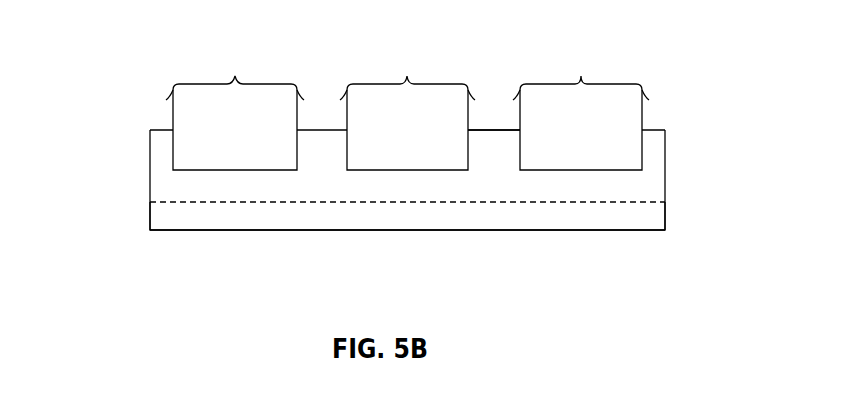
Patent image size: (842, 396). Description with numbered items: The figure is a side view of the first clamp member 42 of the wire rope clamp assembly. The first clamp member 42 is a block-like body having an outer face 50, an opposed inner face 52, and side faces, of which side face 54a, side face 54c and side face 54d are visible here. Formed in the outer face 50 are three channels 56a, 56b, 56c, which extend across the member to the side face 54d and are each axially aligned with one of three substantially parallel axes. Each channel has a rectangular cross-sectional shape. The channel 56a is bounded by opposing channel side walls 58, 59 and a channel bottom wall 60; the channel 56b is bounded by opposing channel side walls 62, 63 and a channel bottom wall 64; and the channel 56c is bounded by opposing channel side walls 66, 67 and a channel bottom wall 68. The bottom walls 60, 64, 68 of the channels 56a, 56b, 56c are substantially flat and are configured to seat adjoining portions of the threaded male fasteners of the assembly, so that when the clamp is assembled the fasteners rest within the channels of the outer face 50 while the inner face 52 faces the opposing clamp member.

The first clamp member 42 is at (139, 39).
The outer face 50 is at (652, 128).
The inner face 52 is at (513, 232).
The side face 54a is at (667, 193).
The side face 54c is at (148, 213).
The side face 54d is at (252, 224).
The channel 56a is at (581, 111).
The channel 56b is at (407, 111).
The channel 56c is at (235, 112).
The channel side wall 58 is at (647, 160).
The channel side wall 59 is at (523, 155).
The channel bottom wall 60 is at (575, 170).
The channel side wall 62 is at (466, 163).
The channel side wall 63 is at (352, 157).
The channel bottom wall 64 is at (405, 170).
The channel side wall 66 is at (285, 163).
The channel side wall 67 is at (180, 160).
The channel bottom wall 68 is at (225, 170).